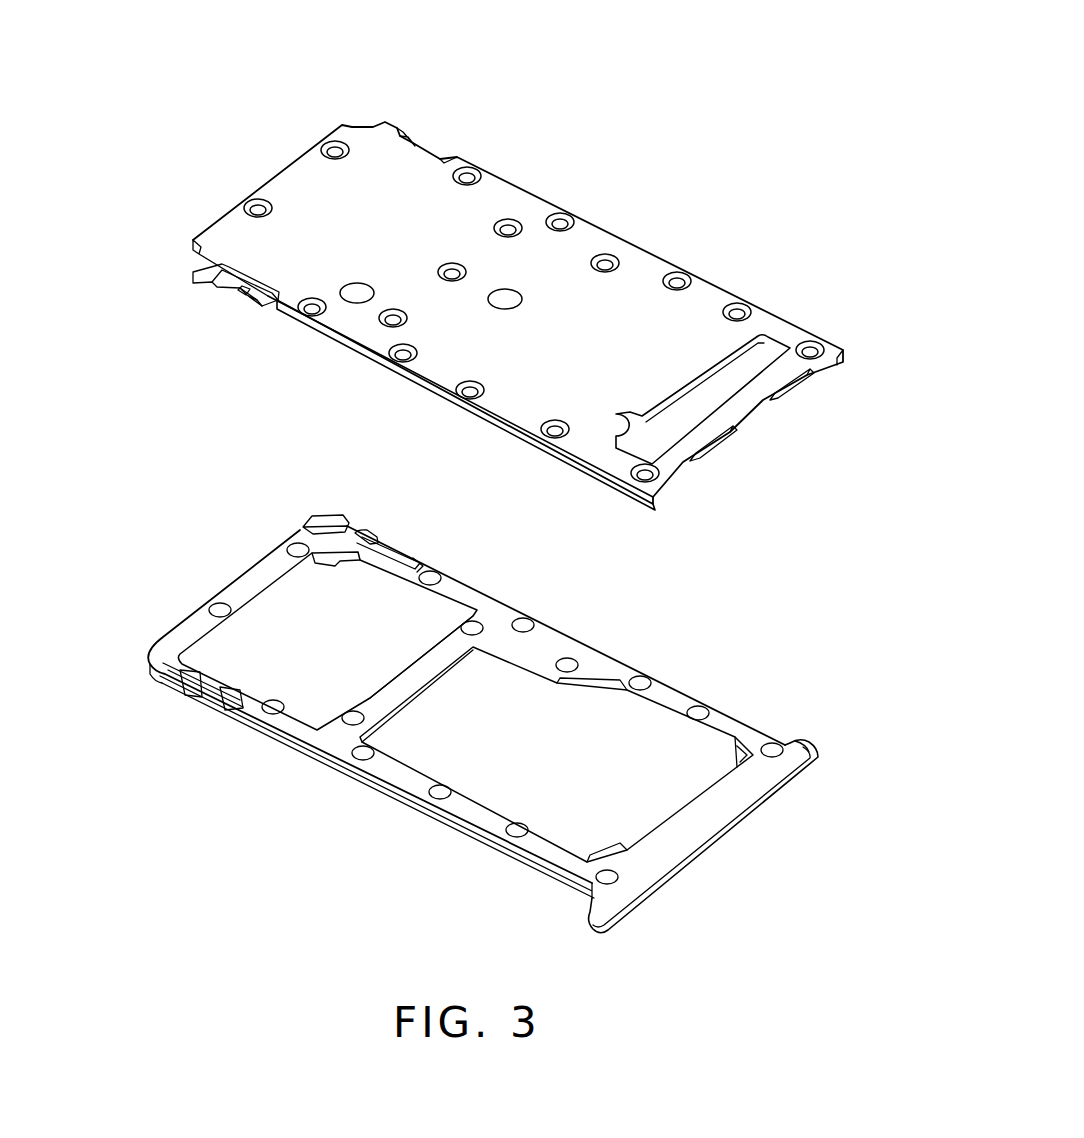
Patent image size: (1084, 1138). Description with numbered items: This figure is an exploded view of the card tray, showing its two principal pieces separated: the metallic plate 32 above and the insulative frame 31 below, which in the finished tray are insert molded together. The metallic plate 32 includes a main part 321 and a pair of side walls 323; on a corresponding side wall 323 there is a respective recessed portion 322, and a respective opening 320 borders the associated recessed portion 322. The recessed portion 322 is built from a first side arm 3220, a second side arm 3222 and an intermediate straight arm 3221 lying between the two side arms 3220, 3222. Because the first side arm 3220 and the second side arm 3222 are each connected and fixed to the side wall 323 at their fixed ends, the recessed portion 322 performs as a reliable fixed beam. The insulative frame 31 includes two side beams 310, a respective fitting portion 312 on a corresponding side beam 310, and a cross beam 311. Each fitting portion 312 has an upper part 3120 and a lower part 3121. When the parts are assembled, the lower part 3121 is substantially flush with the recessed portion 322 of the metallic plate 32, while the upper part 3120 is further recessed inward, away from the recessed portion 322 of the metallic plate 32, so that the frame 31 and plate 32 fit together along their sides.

The insulative frame 31 is at (453, 708).
The side beam 310 is at (540, 642).
The cross beam 311 is at (383, 692).
The fitting portion 312 is at (375, 535).
The upper part 3120 is at (212, 715).
The lower part 3121 is at (203, 672).
The metallic plate 32 is at (466, 286).
The opening 320 is at (184, 301).
The main part 321 is at (318, 190).
The recessed portion 322 is at (415, 142).
The side wall 323 is at (415, 385).
The first side arm 3220 is at (252, 302).
The intermediate straight arm 3221 is at (248, 305).
The second side arm 3222 is at (228, 295).